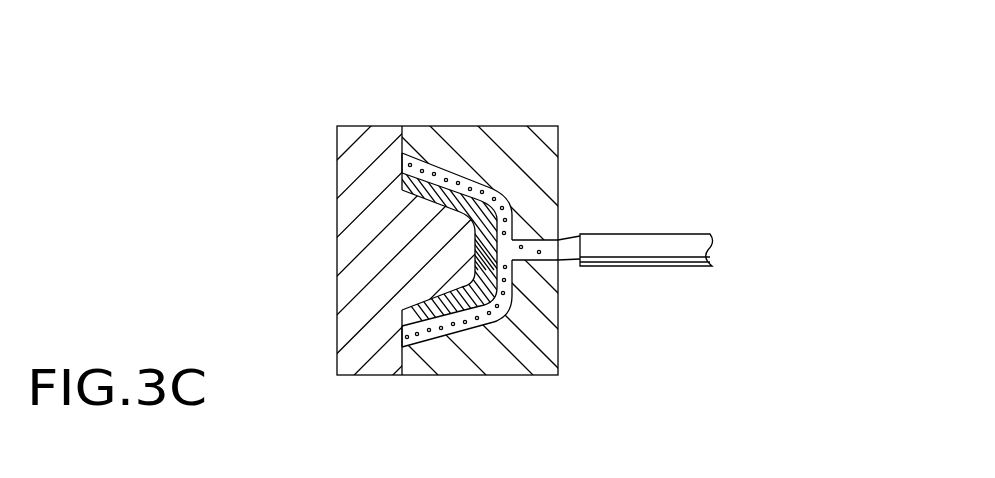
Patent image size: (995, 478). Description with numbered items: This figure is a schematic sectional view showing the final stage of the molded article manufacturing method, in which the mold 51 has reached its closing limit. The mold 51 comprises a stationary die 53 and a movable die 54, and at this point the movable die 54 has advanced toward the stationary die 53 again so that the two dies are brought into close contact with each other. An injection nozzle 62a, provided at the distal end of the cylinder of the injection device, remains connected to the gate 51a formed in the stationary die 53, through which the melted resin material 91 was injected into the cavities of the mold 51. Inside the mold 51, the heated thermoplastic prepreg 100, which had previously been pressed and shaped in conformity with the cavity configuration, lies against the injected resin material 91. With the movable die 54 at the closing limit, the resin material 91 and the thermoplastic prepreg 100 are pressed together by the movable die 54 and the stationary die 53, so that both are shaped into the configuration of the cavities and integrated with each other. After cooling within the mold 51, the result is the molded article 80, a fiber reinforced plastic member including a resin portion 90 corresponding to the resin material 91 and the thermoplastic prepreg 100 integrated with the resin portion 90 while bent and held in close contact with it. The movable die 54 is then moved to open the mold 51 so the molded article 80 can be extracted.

The mold 51 is at (449, 214).
The movable die 54 is at (372, 129).
The stationary die 53 is at (485, 129).
The gate 51a is at (533, 243).
The injection nozzle 62a is at (685, 234).
The molded article 80 is at (445, 314).
The thermoplastic prepreg 100 is at (418, 302).
The resin material 91 is at (471, 293).
The resin portion 90 is at (450, 318).